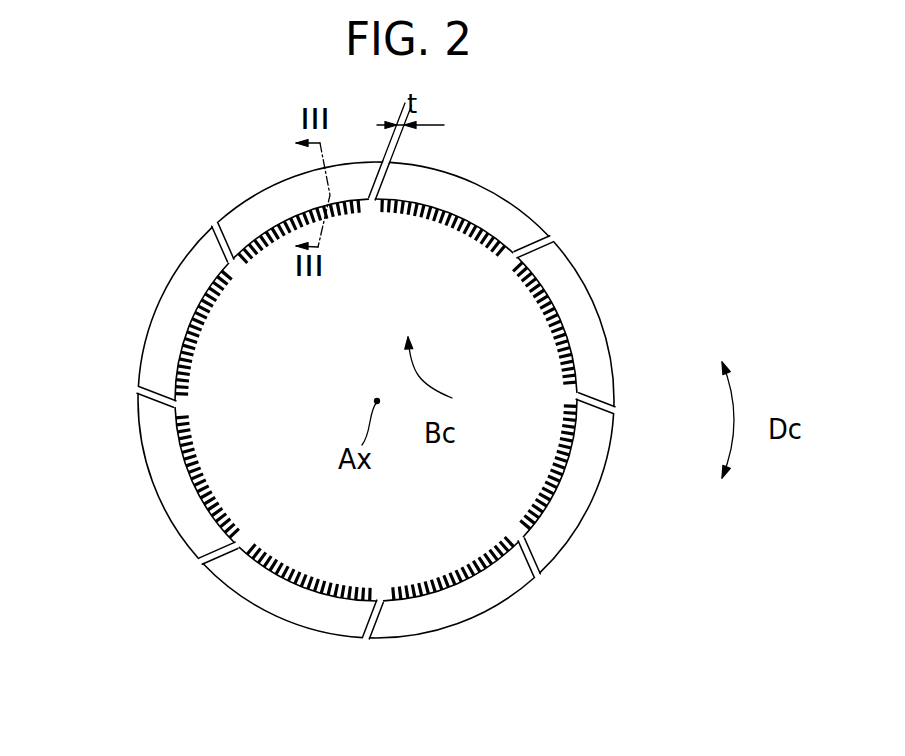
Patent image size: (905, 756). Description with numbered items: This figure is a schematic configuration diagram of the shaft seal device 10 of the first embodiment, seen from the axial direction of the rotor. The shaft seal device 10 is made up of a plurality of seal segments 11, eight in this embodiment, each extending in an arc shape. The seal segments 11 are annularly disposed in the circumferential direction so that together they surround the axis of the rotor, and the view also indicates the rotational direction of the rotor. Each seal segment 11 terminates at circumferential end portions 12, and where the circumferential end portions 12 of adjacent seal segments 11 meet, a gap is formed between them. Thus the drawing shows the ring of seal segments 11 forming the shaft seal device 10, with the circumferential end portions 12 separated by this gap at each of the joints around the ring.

The shaft seal device 10 is at (385, 410).
The seal segment 11 is at (291, 176).
The circumferential end portion 12 is at (602, 398).